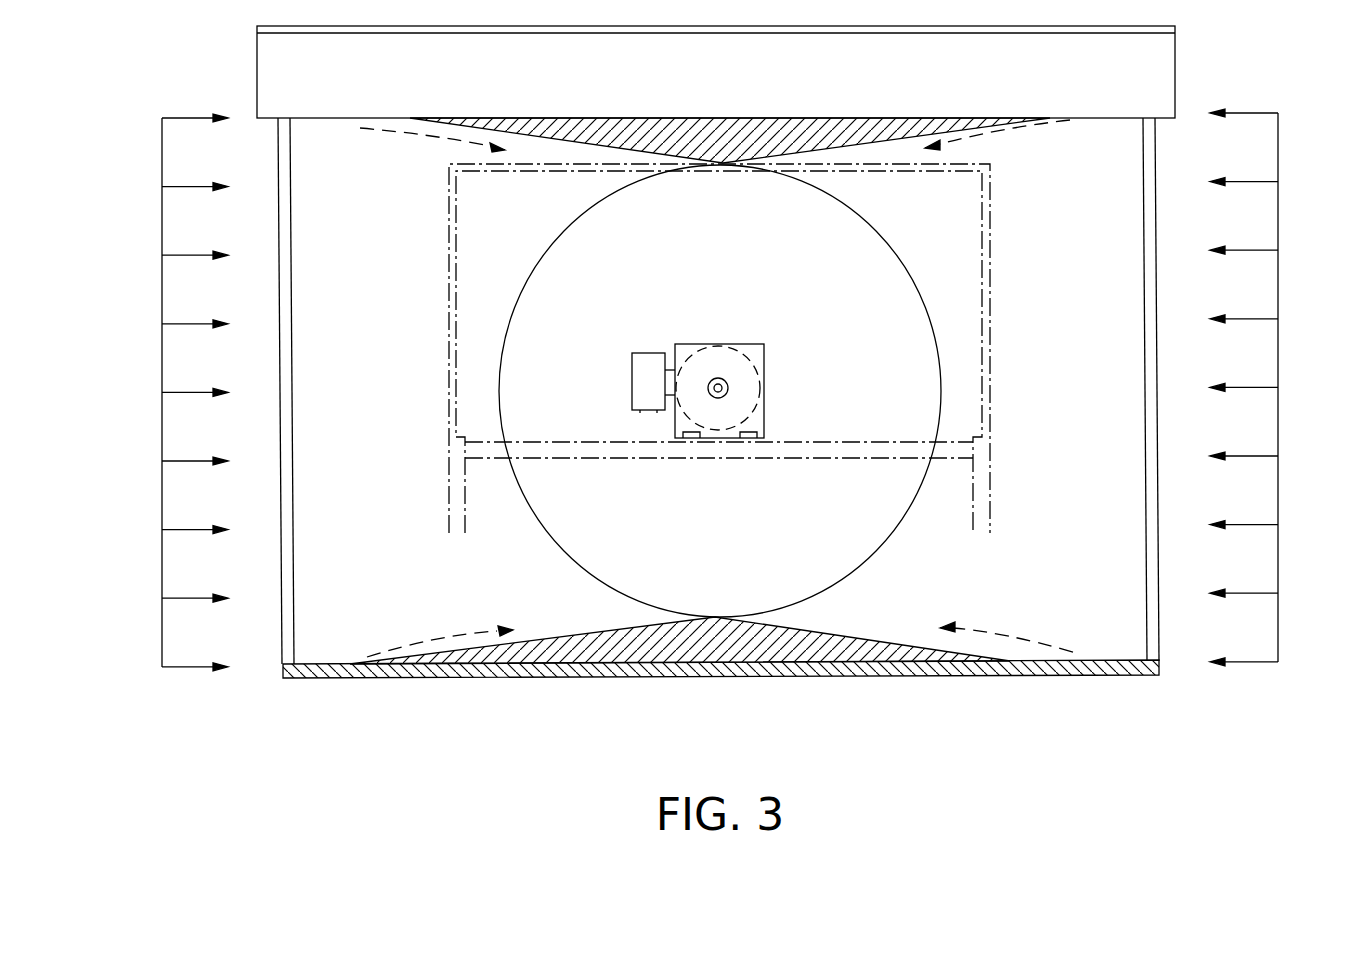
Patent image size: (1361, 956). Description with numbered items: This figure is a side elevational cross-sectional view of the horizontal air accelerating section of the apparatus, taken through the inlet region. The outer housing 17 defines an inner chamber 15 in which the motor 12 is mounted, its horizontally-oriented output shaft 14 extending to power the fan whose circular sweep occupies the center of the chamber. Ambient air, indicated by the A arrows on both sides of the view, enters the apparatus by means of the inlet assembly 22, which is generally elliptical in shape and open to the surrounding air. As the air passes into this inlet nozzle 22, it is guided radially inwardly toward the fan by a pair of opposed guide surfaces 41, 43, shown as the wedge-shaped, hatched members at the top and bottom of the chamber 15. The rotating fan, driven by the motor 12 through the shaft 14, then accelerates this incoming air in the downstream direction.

The motor 12 is at (752, 372).
The output shaft 14 is at (718, 386).
The inner chamber 15 is at (358, 628).
The outer housing 17 is at (1158, 150).
The inlet assembly 22 is at (1100, 135).
The guide surface 41 is at (818, 120).
The guide surface 43 is at (842, 644).
The incoming air arrows A is at (162, 409).